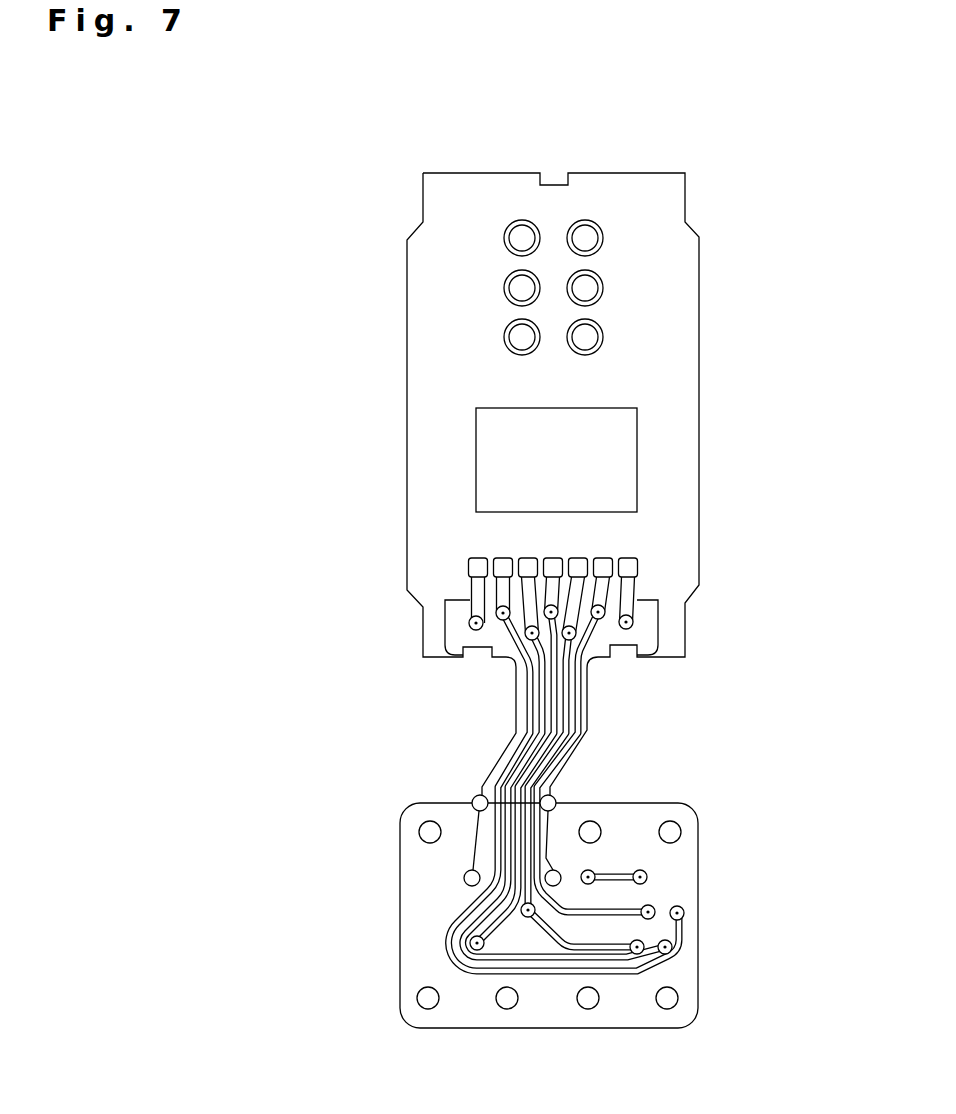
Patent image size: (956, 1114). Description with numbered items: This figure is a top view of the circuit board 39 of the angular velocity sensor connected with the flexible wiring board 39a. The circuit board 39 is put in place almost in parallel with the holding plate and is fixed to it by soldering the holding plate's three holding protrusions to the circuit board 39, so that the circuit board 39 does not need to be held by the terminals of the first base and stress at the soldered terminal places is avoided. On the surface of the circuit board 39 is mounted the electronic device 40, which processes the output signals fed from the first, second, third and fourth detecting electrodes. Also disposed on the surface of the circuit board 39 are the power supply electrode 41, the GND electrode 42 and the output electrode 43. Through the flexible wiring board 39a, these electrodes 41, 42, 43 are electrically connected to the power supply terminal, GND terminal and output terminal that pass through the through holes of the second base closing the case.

The circuit board 39 is at (662, 283).
The flexible wiring board 39a is at (675, 862).
The electronic device 40 is at (623, 438).
The power supply electrode 41 is at (507, 563).
The GND electrode 42 is at (628, 567).
The output electrode 43 is at (603, 563).